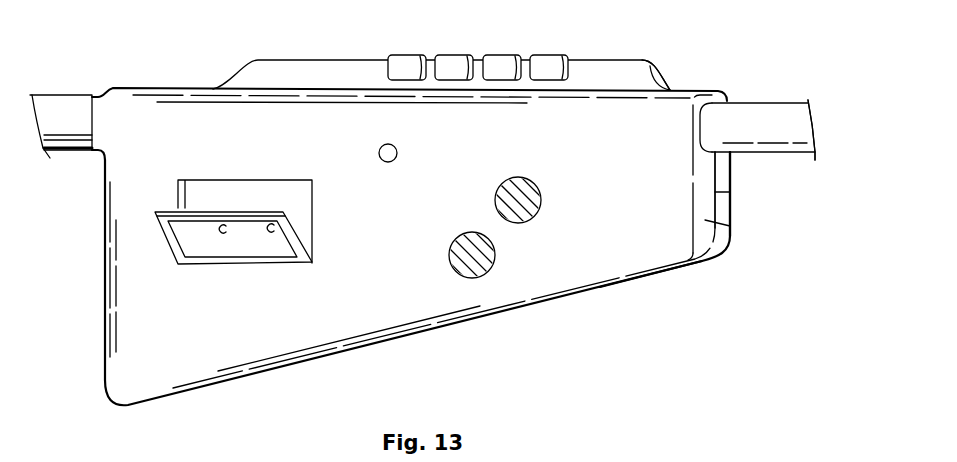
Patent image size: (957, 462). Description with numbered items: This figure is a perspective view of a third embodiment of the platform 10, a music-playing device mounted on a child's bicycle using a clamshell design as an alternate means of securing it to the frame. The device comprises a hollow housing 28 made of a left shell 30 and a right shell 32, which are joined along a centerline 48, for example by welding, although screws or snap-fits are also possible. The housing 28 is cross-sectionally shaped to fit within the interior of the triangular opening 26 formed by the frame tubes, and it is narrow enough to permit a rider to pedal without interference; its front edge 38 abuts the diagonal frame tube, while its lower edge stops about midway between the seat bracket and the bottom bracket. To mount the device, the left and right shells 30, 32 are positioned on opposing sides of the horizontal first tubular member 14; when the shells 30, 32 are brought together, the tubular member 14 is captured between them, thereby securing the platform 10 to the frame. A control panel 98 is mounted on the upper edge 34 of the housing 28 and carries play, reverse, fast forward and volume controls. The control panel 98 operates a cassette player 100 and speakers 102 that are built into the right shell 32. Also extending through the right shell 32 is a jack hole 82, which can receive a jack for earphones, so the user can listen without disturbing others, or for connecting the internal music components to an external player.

The platform 10 is at (367, 358).
The first tubular member 14 is at (768, 113).
The triangular opening 26 is at (800, 157).
The hollow housing 28 is at (171, 80).
The left shell 30 is at (723, 177).
The right shell 32 is at (630, 252).
The upper edge 34 is at (598, 90).
The front edge 38 is at (705, 220).
The centerline 48 is at (715, 192).
The jack hole 82 is at (385, 143).
The control panel 98 is at (498, 67).
The cassette player 100 is at (197, 239).
The speakers 102 is at (537, 217).